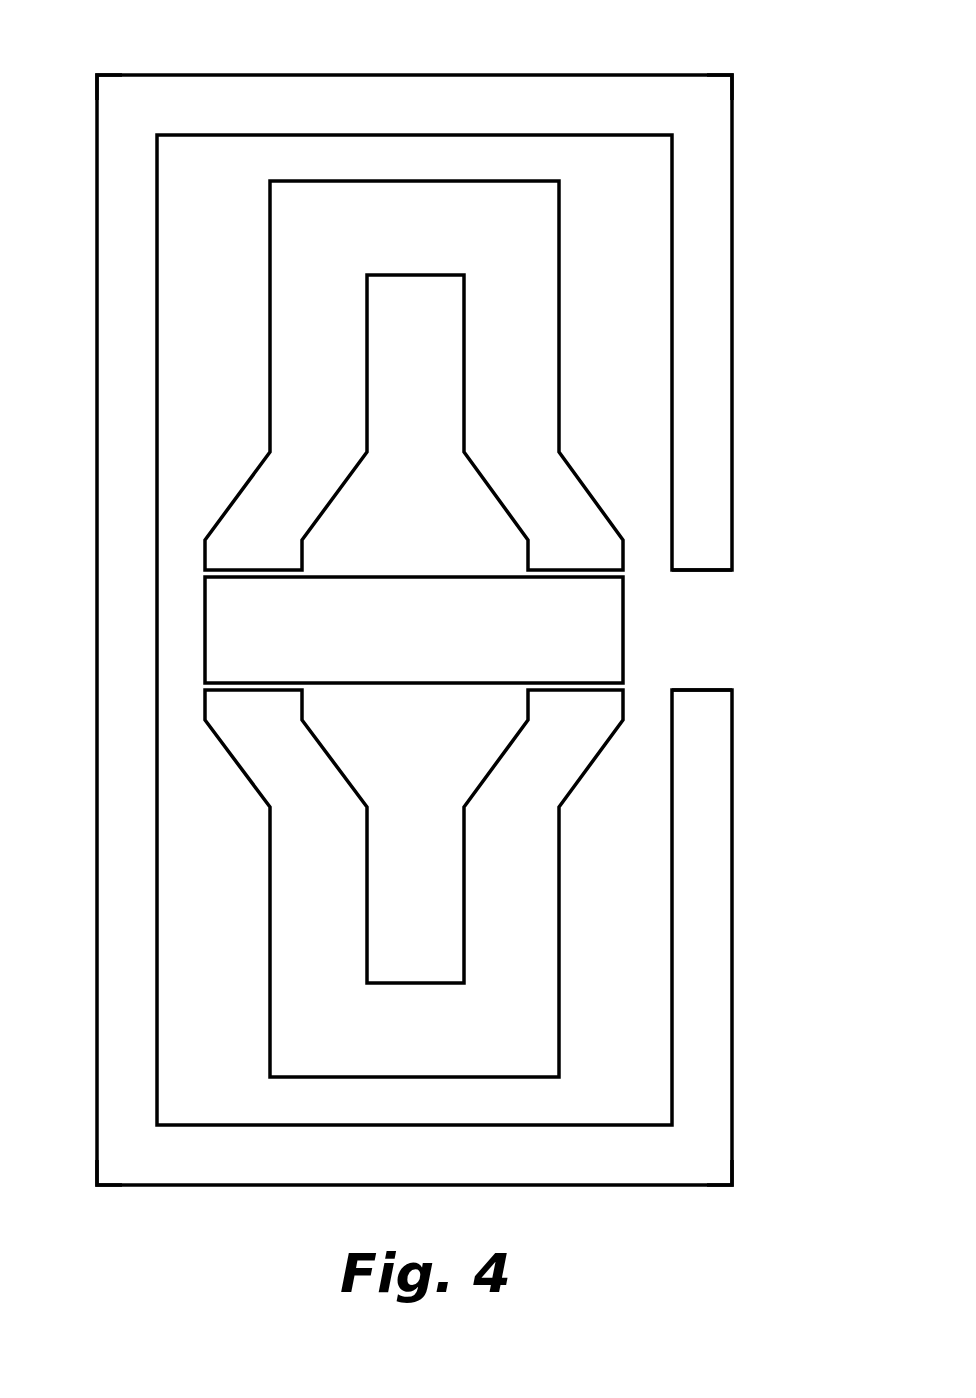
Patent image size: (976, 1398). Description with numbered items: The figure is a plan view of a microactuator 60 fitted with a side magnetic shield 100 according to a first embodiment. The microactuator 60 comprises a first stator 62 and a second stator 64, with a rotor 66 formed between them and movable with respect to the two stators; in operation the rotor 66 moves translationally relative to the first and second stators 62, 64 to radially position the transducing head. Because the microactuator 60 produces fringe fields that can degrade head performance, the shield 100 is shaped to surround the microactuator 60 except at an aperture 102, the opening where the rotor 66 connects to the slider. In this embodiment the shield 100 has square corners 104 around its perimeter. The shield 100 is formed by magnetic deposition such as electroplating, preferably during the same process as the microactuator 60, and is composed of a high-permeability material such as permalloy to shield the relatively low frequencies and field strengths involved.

The microactuator 60 is at (333, 629).
The first stator 62 is at (559, 322).
The second stator 64 is at (560, 912).
The rotor 66 is at (398, 577).
The side magnetic shield 100 is at (742, 320).
The aperture 102 is at (695, 628).
The square corners 104 is at (97, 75).